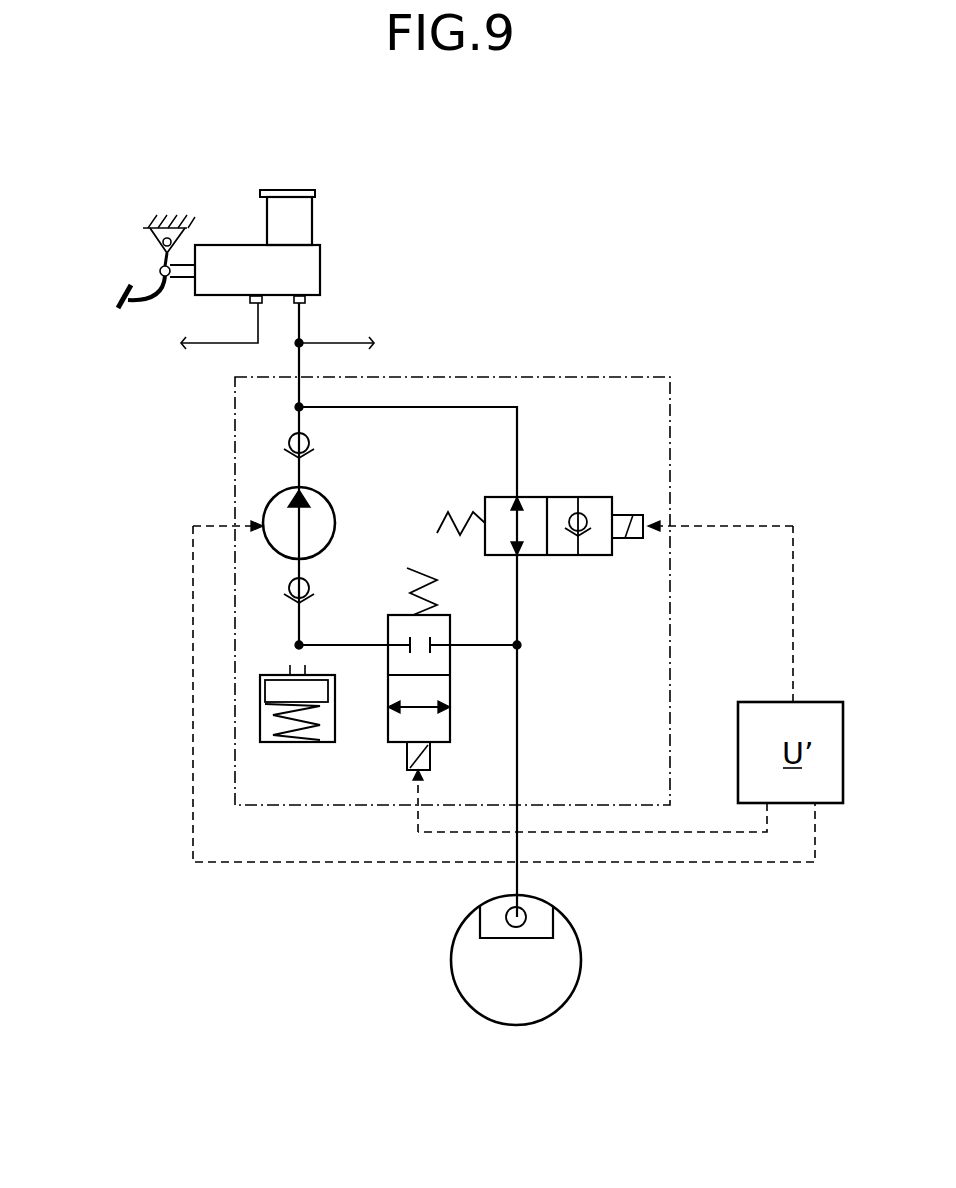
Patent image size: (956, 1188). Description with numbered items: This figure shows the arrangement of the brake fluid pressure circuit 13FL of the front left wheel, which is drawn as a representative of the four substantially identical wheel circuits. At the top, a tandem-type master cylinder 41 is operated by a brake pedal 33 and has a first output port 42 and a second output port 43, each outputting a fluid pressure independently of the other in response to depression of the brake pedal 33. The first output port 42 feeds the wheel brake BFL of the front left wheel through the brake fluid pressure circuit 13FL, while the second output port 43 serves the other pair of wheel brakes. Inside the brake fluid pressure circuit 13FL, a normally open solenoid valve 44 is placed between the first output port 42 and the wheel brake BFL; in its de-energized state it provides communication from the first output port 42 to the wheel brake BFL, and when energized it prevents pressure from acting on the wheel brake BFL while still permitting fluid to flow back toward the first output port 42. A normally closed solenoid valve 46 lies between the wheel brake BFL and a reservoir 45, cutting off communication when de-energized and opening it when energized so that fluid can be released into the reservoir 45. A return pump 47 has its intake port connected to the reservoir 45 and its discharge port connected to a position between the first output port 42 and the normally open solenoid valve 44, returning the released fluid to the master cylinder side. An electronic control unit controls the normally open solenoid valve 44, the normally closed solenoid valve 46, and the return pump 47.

The brake pedal 33 is at (118, 295).
The tandem-type master cylinder 41 is at (310, 262).
The first output port 42 is at (305, 305).
The second output port 43 is at (252, 305).
The normally open solenoid valve 44 is at (555, 555).
The reservoir 45 is at (283, 745).
The normally closed solenoid valve 46 is at (387, 637).
The return pump 47 is at (325, 523).
The brake fluid pressure circuit 13FL is at (533, 377).
The wheel brake BFL is at (540, 908).